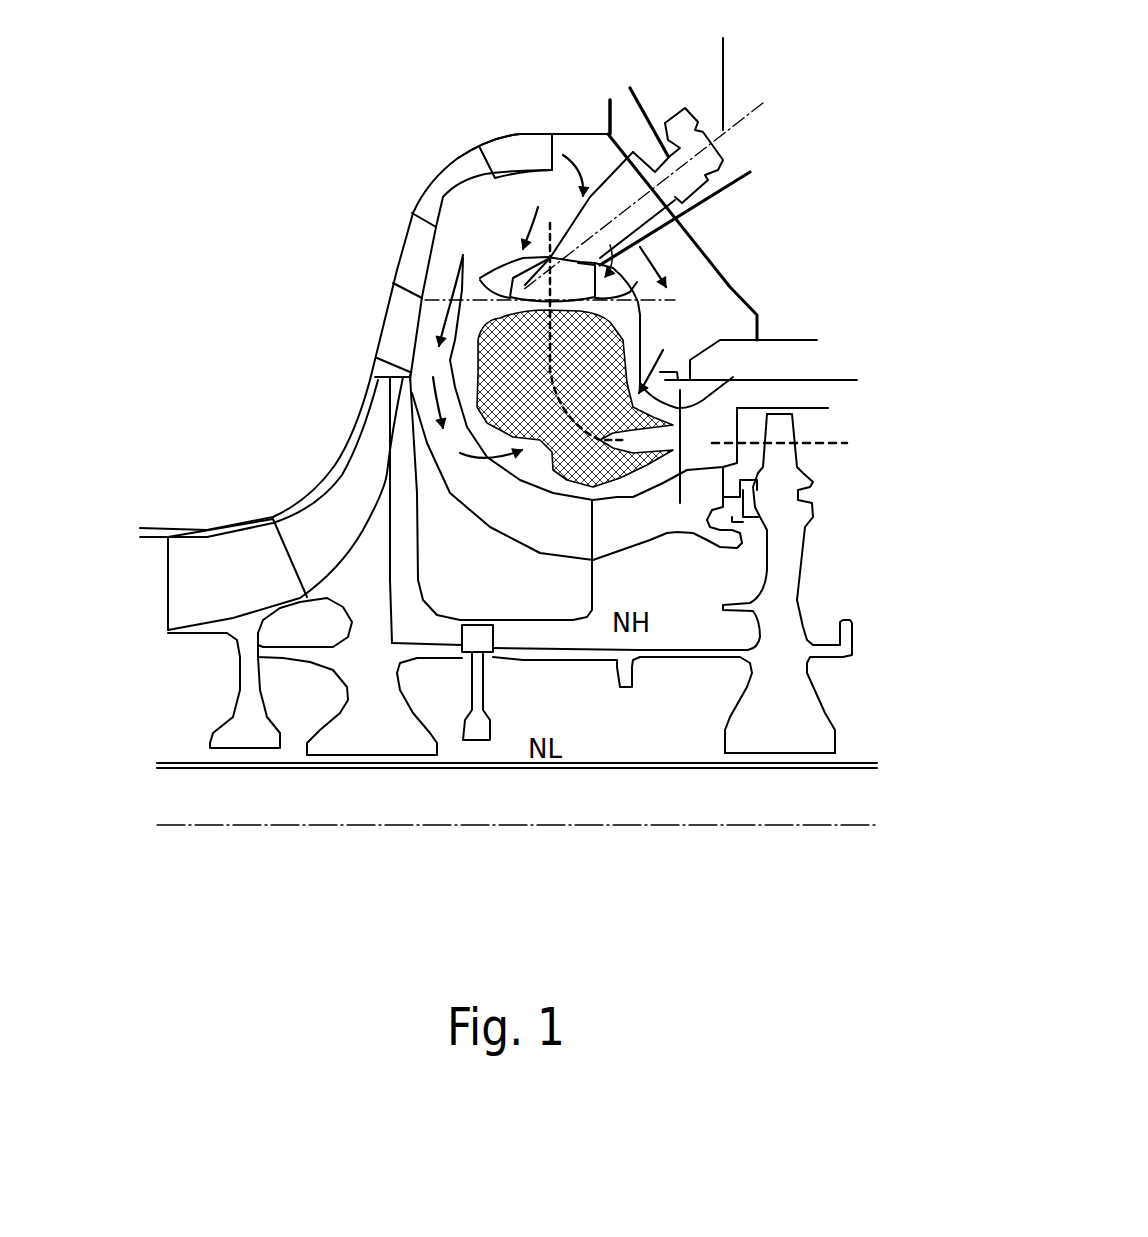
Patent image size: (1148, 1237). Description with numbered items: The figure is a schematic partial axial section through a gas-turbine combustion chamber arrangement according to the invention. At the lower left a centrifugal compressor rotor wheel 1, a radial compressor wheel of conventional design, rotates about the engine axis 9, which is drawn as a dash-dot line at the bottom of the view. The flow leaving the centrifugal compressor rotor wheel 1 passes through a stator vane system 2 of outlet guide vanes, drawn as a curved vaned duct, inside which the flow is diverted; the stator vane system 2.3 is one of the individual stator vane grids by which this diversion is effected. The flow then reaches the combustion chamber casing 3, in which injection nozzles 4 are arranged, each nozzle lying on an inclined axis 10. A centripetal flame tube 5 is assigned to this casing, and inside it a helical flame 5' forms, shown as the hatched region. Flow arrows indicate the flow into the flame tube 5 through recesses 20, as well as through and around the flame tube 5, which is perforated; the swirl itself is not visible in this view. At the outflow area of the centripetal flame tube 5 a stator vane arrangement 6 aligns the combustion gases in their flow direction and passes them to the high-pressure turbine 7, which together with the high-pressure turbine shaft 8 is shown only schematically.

The centrifugal compressor rotor wheel 1 is at (336, 515).
The stator vane system 2 is at (410, 260).
The stator vane system 2.3 is at (523, 158).
The combustion chamber casing 3 is at (703, 229).
The injection nozzles 4 is at (630, 88).
The centripetal flame tube 5 is at (753, 327).
The helical flame 5' is at (658, 386).
The stator vane arrangement 6 is at (699, 426).
The high-pressure turbine 7 is at (775, 502).
The high-pressure turbine shaft 8 is at (569, 658).
The engine axis 9 is at (720, 827).
The injector axis 10 is at (726, 67).
The recesses 20 is at (643, 223).